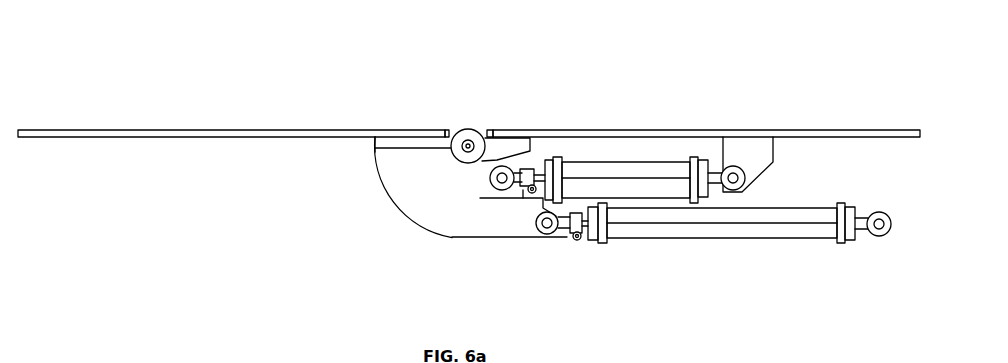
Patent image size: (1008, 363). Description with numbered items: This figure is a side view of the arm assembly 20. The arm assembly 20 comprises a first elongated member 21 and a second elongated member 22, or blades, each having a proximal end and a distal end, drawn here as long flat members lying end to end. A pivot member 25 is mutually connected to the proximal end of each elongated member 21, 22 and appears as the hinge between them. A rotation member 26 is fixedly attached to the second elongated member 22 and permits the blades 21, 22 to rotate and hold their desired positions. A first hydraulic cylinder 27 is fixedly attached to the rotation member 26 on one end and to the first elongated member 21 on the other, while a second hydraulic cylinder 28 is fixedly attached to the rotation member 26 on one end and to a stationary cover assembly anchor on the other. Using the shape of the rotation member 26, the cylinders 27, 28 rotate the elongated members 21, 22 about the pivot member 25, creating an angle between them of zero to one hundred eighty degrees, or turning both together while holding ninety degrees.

The arm assembly 20 is at (785, 57).
The first elongated member 21 is at (790, 130).
The second elongated member 22 is at (240, 130).
The pivot member 25 is at (459, 151).
The rotation member 26 is at (458, 217).
The first hydraulic cylinder 27 is at (628, 175).
The second hydraulic cylinder 28 is at (708, 233).